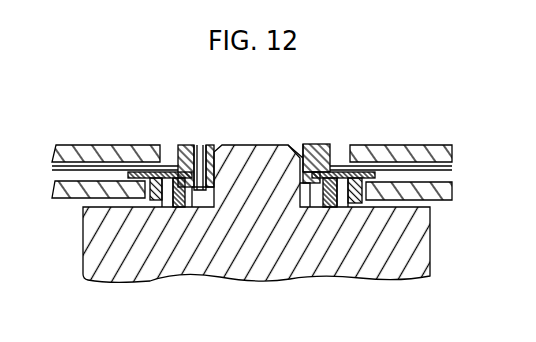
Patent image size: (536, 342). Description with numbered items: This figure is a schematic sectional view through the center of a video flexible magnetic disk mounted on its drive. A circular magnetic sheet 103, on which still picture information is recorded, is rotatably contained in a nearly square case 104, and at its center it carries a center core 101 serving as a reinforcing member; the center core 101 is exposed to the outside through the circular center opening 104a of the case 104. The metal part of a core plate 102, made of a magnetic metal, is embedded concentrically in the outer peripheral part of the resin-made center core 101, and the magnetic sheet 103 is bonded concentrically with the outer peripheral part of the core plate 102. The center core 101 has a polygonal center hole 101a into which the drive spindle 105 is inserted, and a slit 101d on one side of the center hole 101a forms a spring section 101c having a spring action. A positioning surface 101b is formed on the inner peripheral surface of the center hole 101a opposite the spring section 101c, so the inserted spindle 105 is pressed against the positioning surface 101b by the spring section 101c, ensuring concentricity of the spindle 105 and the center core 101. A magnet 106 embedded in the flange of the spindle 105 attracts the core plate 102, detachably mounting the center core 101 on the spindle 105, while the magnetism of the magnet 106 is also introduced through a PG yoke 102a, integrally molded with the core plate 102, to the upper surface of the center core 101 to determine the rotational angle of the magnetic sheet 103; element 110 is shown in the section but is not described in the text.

The center core 101 is at (332, 148).
The center hole 101a is at (320, 147).
The positioning surface 101b is at (302, 160).
The spring section 101c is at (206, 146).
The slit 101d is at (195, 146).
The core plate 102 is at (342, 208).
The PG yoke 102a is at (190, 171).
The magnetic sheet 103 is at (420, 170).
The case 104 is at (452, 158).
The center opening 104a is at (252, 158).
The drive spindle 105 is at (256, 150).
The magnet 106 is at (177, 208).
The cavity 110 is at (309, 208).